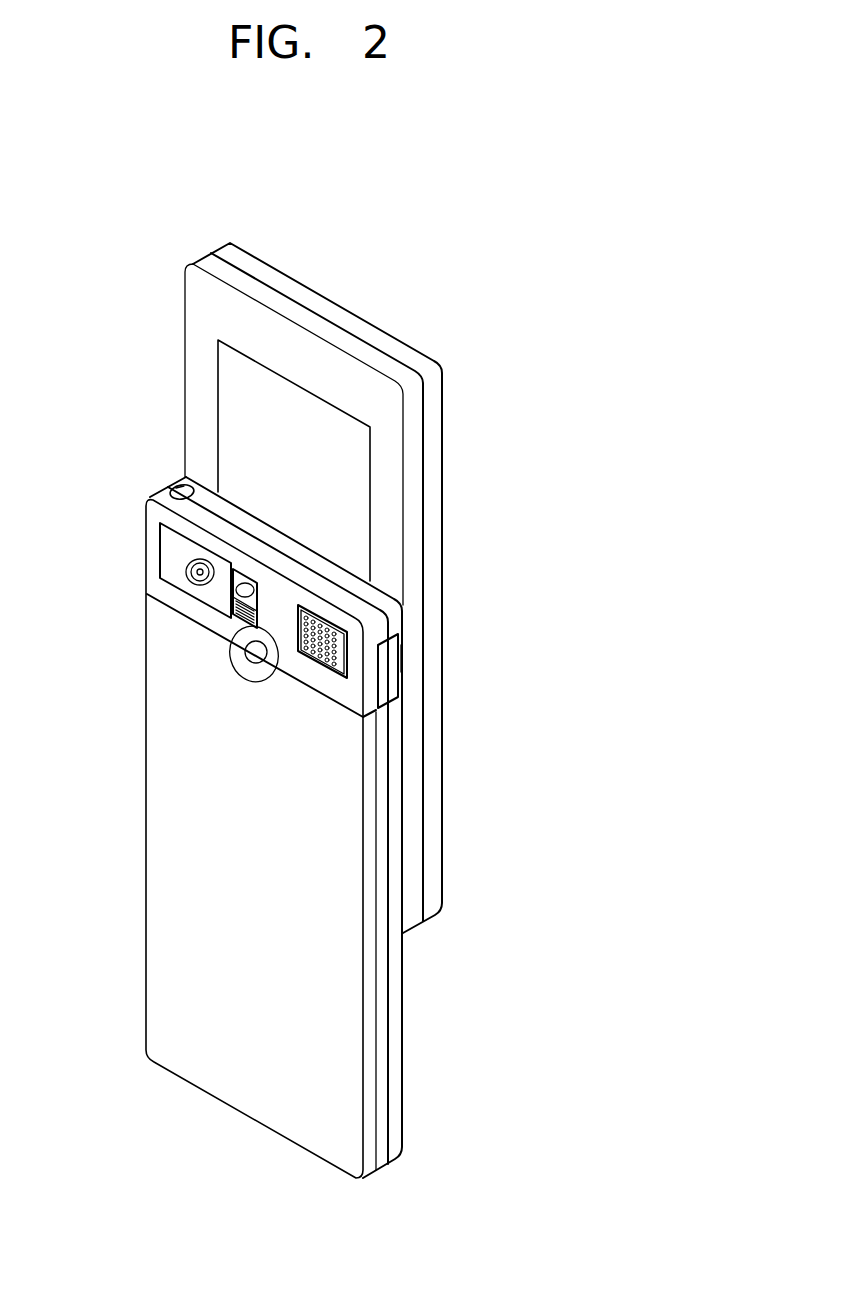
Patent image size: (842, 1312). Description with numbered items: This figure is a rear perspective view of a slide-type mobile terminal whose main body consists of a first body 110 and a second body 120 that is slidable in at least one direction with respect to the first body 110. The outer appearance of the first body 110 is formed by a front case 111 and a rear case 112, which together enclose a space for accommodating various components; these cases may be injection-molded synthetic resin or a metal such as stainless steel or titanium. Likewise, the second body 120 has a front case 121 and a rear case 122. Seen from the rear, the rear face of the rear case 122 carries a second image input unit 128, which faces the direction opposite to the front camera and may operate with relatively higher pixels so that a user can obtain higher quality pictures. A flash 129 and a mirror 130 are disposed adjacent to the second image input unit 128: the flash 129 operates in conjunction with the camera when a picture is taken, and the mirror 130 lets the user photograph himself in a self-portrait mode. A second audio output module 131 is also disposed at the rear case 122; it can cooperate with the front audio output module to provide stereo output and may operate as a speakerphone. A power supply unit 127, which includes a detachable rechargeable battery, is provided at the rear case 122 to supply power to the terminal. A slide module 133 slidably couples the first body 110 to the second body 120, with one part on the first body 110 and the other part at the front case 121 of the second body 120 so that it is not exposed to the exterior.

The first body 110 is at (157, 433).
The front case 111 is at (433, 523).
The rear case 112 is at (413, 470).
The slide module 133 is at (226, 405).
The second body 120 is at (128, 733).
The front case 121 is at (395, 1008).
The rear case 122 is at (382, 958).
The power supply unit 127 is at (160, 902).
The second image input unit 128 is at (190, 580).
The flash 129 is at (237, 622).
The mirror 130 is at (236, 592).
The second audio output module 131 is at (330, 652).